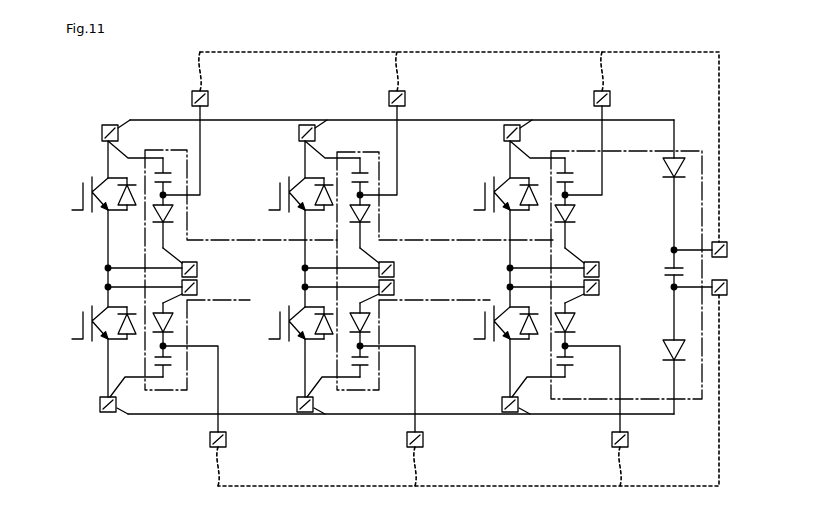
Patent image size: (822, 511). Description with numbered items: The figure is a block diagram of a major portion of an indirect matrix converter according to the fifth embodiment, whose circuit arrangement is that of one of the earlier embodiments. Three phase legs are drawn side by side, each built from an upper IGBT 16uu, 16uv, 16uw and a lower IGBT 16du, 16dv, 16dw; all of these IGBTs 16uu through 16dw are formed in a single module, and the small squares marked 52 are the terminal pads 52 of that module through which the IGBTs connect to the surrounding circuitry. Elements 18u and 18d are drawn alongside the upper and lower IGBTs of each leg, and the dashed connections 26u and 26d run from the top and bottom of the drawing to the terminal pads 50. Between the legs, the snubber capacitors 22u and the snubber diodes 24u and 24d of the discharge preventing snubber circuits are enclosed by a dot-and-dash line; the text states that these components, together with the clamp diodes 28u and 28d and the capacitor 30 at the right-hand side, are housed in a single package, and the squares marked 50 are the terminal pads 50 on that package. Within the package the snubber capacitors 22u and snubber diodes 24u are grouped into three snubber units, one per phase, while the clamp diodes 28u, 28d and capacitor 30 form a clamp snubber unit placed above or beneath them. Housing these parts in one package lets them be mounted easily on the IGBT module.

The IGBT 16uu is at (98, 182).
The IGBT 16uv is at (290, 180).
The IGBT 16uw is at (500, 180).
The IGBT 16du is at (98, 312).
The IGBT 16dv is at (300, 312).
The IGBT 16dw is at (500, 312).
The upper arm freewheeling diode 18u is at (128, 206).
The lower arm freewheeling diode 18d is at (128, 335).
The snubber capacitor 22u is at (167, 171).
The snubber diode 24u is at (172, 213).
The snubber diode 24d is at (172, 322).
The positive DC bus line 26u is at (204, 76).
The negative DC bus line 26d is at (222, 470).
The clamp diode 28u is at (680, 164).
The clamp diode 28d is at (684, 350).
The capacitor 30 is at (684, 270).
The terminal pad 50 is at (210, 99).
The terminal pad 52 is at (102, 127).